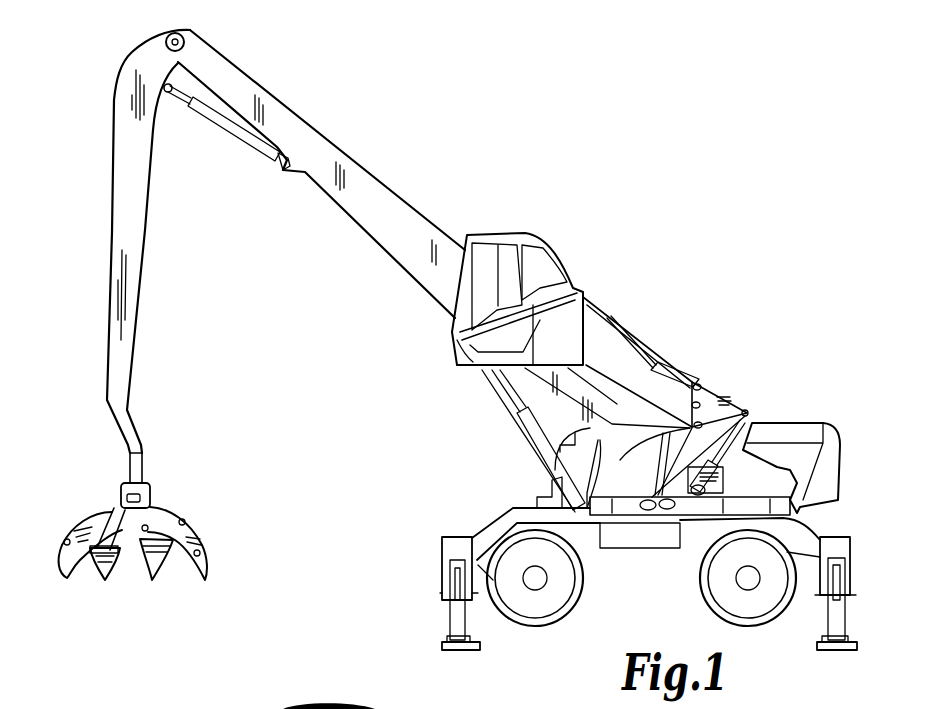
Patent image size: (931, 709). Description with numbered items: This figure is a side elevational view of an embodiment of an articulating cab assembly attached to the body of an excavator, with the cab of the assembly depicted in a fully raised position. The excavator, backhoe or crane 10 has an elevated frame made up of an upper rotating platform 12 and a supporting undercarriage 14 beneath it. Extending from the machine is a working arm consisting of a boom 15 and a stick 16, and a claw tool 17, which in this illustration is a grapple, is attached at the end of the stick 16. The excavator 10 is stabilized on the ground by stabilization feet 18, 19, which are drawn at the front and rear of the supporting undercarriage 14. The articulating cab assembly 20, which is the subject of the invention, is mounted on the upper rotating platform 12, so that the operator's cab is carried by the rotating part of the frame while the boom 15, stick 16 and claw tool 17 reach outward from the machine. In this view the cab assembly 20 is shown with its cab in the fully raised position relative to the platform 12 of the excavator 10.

The excavator 10 is at (591, 278).
The upper rotating platform 12 is at (777, 423).
The supporting undercarriage 14 is at (690, 557).
The boom 15 is at (362, 166).
The stick 16 is at (112, 233).
The claw tool 17 is at (90, 512).
The stabilization foot 18 is at (447, 615).
The stabilization foot 19 is at (823, 620).
The articulating cab assembly 20 is at (667, 353).